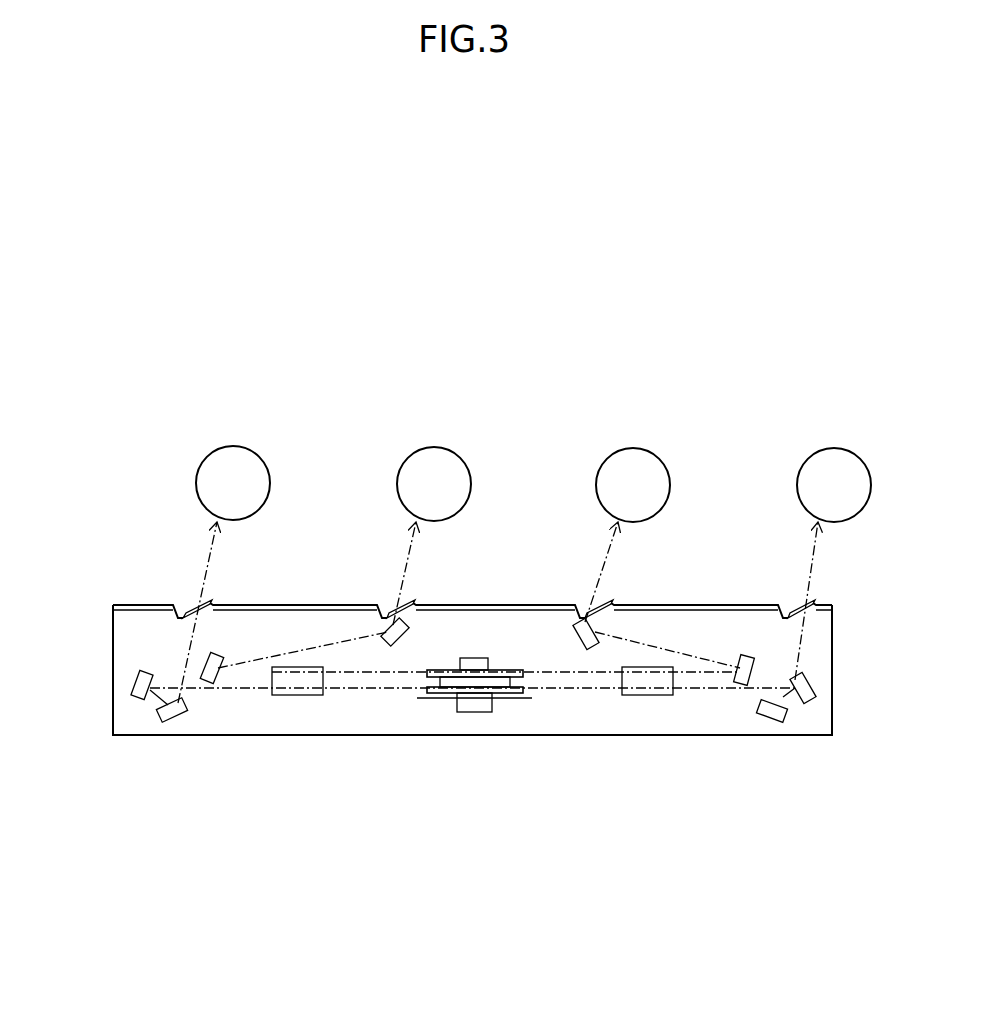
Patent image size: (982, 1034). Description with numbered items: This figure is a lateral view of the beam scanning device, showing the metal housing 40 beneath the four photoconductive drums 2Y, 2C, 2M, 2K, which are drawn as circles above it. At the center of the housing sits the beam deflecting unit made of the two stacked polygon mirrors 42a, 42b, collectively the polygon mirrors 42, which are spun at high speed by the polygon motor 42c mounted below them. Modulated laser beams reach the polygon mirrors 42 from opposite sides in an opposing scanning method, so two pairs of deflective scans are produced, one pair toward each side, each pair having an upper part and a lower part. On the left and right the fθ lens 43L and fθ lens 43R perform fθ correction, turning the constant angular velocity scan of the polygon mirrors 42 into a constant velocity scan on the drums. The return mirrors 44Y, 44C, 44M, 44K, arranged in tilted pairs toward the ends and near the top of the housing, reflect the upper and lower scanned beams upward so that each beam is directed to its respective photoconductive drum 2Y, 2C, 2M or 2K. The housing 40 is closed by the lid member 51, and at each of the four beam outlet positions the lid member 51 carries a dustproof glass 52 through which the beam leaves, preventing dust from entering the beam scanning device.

The housing 40 is at (113, 665).
The lid member 51 is at (133, 605).
The dustproof glasses 52 is at (190, 604).
The photoconductive drum 2Y is at (220, 448).
The photoconductive drum 2C is at (424, 448).
The photoconductive drum 2M is at (621, 448).
The photoconductive drum 2K is at (822, 448).
The polygon mirrors 42 is at (507, 746).
The polygon mirror 42a is at (512, 690).
The polygon mirror 42b is at (500, 693).
The polygon motor 42c is at (468, 712).
The fθ lens 43L is at (300, 695).
The fθ lens 43R is at (655, 697).
The return mirror 44Y is at (170, 722).
The return mirror 44C is at (388, 625).
The return mirror 44M is at (740, 657).
The return mirror 44K is at (800, 700).